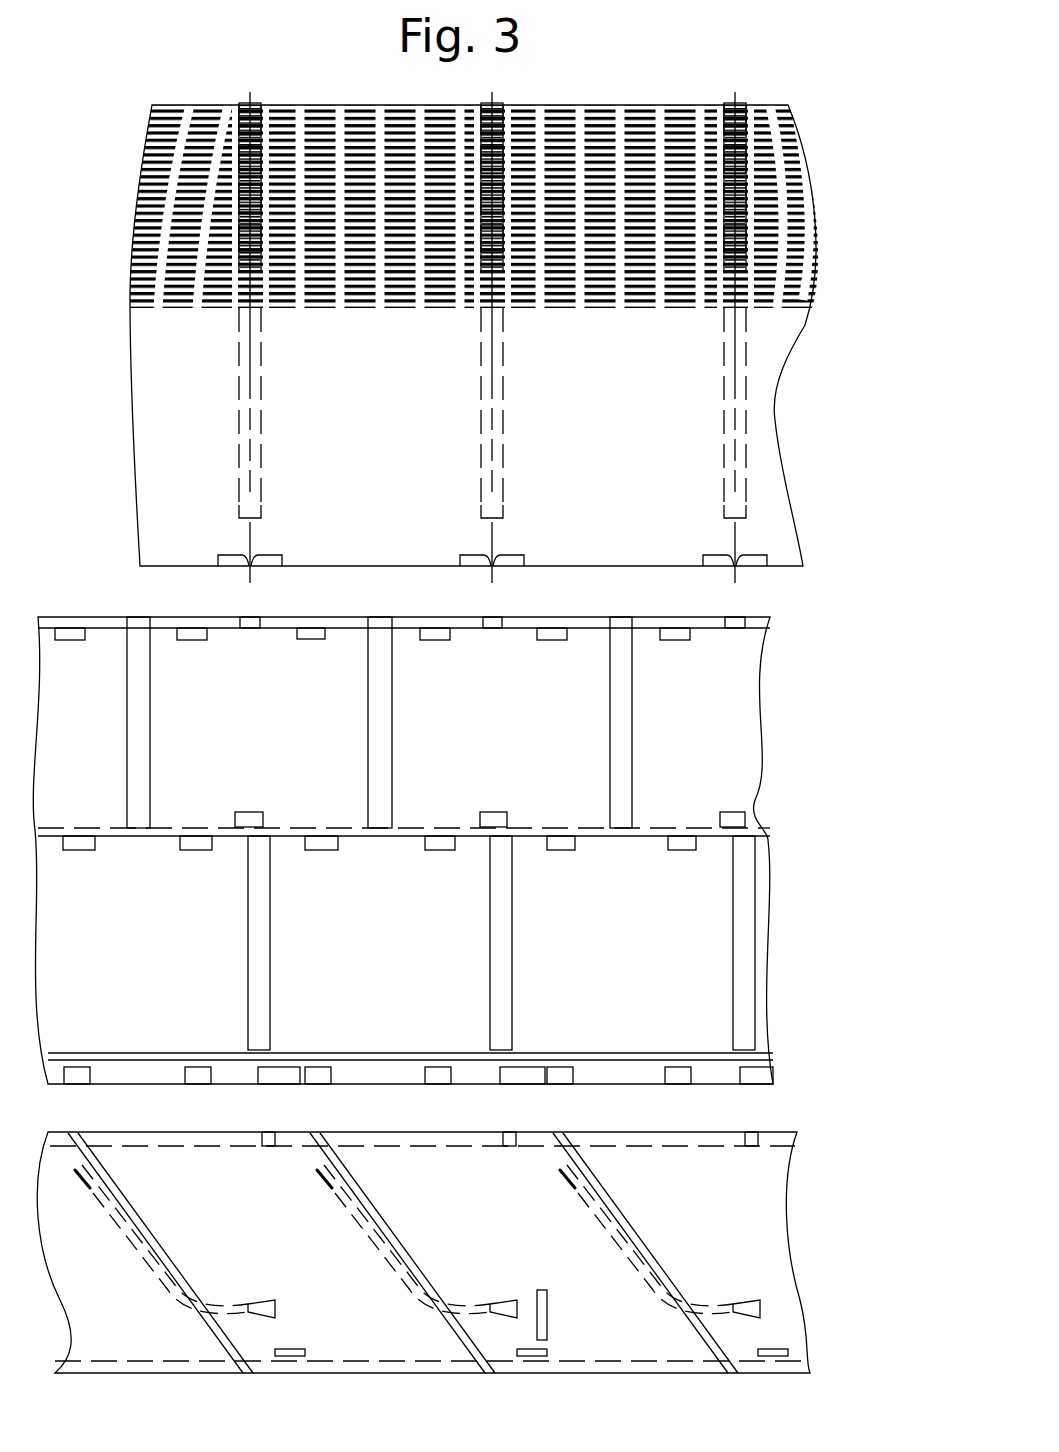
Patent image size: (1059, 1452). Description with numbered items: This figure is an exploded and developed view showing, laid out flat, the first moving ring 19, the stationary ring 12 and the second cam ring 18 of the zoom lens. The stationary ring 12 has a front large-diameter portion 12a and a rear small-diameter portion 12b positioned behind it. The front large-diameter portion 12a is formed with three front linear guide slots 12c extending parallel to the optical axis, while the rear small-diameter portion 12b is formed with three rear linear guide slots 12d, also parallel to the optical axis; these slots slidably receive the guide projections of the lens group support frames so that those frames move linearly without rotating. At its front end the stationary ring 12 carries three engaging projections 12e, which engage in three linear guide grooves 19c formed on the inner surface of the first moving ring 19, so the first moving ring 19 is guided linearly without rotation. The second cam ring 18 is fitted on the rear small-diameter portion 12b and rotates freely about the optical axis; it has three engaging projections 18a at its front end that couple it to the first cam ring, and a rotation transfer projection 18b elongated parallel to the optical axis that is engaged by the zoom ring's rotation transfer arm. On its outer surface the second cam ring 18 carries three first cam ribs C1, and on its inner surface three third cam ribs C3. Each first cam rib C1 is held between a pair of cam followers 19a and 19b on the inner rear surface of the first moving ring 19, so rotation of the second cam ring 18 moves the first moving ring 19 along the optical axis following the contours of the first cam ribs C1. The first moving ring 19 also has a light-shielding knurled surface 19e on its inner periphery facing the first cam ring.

The first moving ring 19 is at (521, 303).
The cam follower 19a is at (718, 557).
The cam follower 19b is at (748, 556).
The linear guide groove 19c is at (262, 395).
The light-shielding knurled surface 19e is at (632, 128).
The stationary ring 12 is at (452, 850).
The front large-diameter portion 12a is at (445, 722).
The rear small-diameter portion 12b is at (441, 960).
The front linear guide slot 12c is at (152, 750).
The rear linear guide slot 12d is at (268, 970).
The engaging projection 12e is at (245, 628).
The second cam ring 18 is at (453, 1234).
The engaging projection 18a is at (508, 1133).
The rotation transfer projection 18b is at (538, 1310).
The first cam rib C1 is at (628, 1205).
The third cam rib C3 is at (372, 1260).